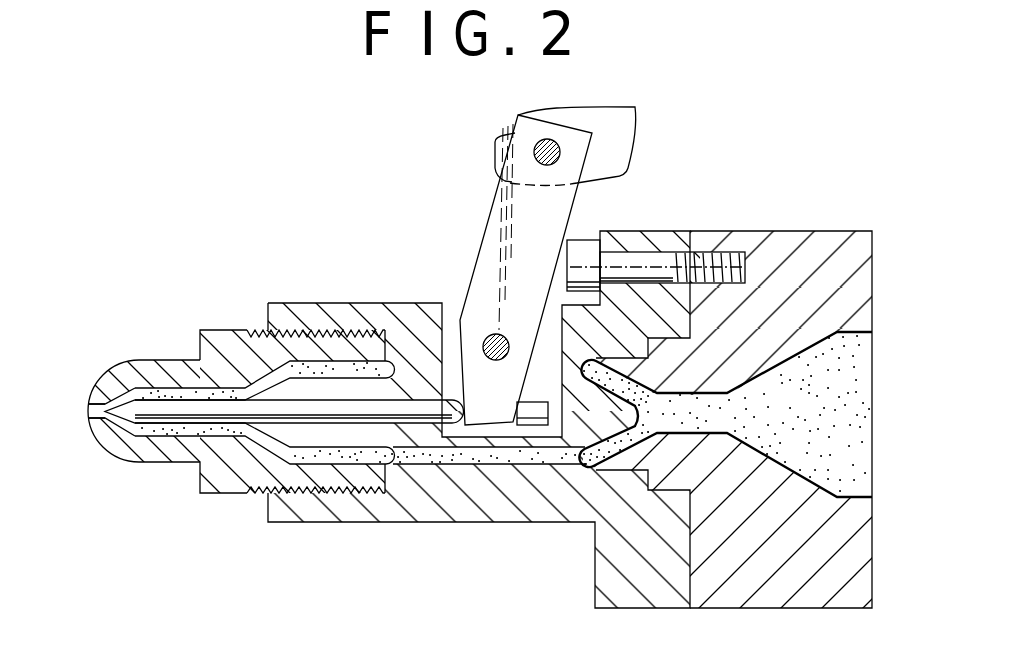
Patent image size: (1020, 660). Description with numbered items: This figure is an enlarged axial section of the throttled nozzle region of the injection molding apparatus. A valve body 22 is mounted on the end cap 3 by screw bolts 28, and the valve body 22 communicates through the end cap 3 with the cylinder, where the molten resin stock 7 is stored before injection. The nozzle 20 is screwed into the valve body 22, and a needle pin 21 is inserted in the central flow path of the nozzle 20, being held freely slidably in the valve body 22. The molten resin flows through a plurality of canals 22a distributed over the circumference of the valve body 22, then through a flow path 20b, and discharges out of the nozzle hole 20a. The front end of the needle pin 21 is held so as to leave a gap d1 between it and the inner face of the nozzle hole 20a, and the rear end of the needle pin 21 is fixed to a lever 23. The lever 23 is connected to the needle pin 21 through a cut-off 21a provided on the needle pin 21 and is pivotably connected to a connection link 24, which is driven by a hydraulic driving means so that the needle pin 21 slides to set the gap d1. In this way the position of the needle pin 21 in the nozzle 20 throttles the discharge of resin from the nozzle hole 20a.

The end cap 3 is at (806, 262).
The molten resin stock 7 is at (823, 472).
The nozzle 20 is at (228, 345).
The nozzle hole 20a is at (86, 404).
The flow path 20b is at (258, 445).
The gap d1 is at (118, 422).
The needle pin 21 is at (182, 430).
The cut-off 21a is at (458, 425).
The valve body 22 is at (397, 498).
The canals 22a is at (547, 462).
The lever 23 is at (483, 260).
The connection link 24 is at (623, 131).
The screw bolts 28 is at (630, 260).